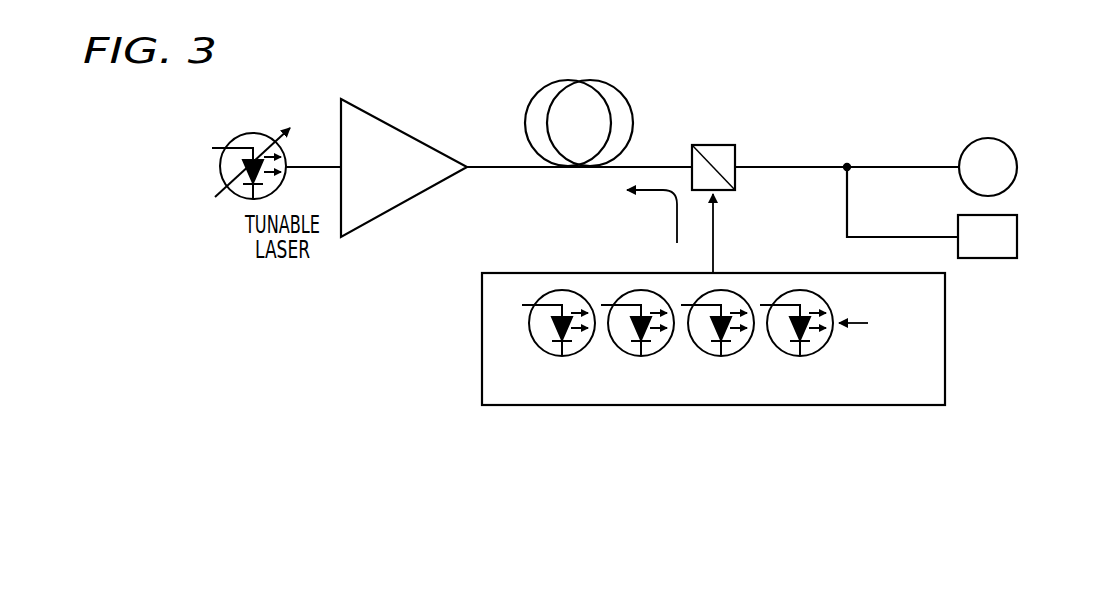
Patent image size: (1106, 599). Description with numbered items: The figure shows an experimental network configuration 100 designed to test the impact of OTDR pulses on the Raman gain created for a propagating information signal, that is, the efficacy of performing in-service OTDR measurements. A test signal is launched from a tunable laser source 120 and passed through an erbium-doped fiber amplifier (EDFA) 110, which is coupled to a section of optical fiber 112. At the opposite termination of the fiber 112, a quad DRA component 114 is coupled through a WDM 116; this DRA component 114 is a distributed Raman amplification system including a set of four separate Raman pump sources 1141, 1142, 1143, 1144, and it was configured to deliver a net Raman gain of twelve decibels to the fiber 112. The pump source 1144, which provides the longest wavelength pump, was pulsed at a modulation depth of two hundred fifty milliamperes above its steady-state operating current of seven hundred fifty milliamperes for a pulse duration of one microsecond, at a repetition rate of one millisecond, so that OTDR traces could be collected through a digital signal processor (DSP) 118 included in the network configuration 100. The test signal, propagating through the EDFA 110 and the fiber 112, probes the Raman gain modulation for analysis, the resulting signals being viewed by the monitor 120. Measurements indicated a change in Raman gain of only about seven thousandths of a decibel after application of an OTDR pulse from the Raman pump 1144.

The experimental network configuration 100 is at (924, 102).
The erbium-doped fiber amplifier 110 is at (403, 132).
The optical fiber 112 is at (620, 83).
The quad DRA component 114 is at (481, 334).
The Raman pump source 1141 is at (546, 357).
The Raman pump source 1142 is at (625, 357).
The Raman pump source 1143 is at (705, 357).
The Raman pump source 1144 is at (784, 357).
The WDM 116 is at (708, 144).
The digital signal processor 118 is at (1018, 238).
The tunable laser source 120 is at (1012, 155).